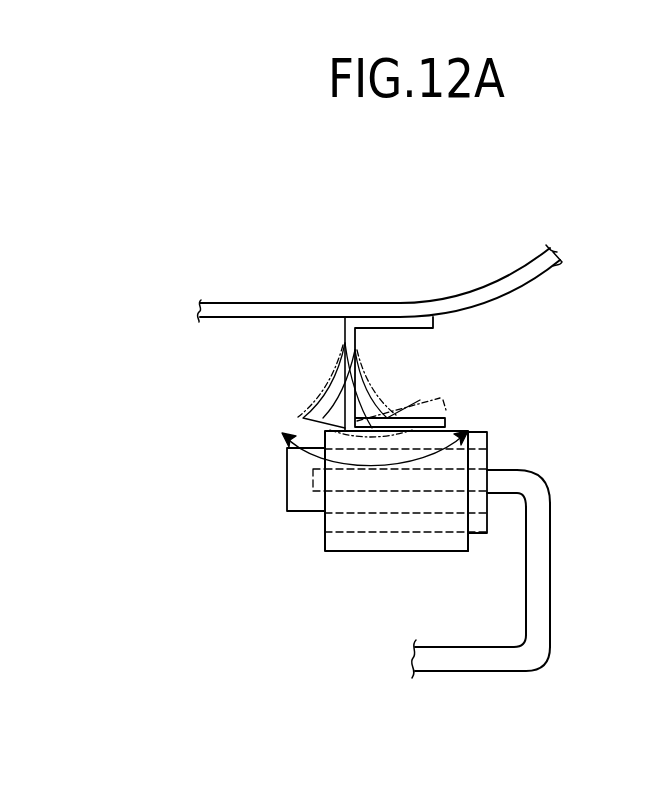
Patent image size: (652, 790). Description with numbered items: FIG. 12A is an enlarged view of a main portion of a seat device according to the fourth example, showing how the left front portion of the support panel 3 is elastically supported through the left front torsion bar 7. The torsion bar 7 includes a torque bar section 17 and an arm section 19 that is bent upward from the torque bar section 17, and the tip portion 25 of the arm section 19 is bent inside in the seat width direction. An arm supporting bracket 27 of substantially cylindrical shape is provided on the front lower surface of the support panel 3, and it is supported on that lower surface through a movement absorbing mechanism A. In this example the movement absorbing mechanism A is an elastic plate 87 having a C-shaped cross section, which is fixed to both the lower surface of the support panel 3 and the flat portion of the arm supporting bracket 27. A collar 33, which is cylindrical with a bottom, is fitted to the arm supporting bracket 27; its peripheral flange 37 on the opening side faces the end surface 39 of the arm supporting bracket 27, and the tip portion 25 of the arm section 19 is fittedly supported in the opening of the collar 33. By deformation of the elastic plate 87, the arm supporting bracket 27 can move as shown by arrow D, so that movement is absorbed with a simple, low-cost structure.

The support panel 3 is at (536, 278).
The left front torsion bar 7 is at (530, 605).
The torque bar section 17 is at (453, 673).
The arm section 19 is at (550, 585).
The tip portion 25 is at (513, 463).
The arm supporting bracket 27 is at (365, 552).
The collar 33 is at (300, 511).
The peripheral flange 37 is at (490, 448).
The end surface 39 is at (468, 543).
The elastic plate 87 is at (370, 358).
The movement absorbing mechanism A is at (322, 348).
The arrow D is at (495, 403).